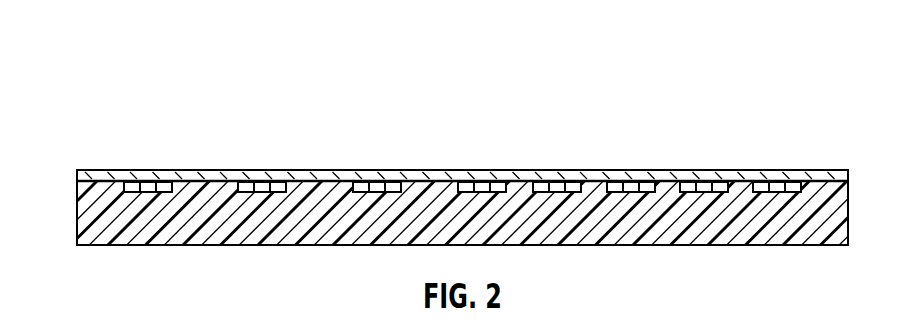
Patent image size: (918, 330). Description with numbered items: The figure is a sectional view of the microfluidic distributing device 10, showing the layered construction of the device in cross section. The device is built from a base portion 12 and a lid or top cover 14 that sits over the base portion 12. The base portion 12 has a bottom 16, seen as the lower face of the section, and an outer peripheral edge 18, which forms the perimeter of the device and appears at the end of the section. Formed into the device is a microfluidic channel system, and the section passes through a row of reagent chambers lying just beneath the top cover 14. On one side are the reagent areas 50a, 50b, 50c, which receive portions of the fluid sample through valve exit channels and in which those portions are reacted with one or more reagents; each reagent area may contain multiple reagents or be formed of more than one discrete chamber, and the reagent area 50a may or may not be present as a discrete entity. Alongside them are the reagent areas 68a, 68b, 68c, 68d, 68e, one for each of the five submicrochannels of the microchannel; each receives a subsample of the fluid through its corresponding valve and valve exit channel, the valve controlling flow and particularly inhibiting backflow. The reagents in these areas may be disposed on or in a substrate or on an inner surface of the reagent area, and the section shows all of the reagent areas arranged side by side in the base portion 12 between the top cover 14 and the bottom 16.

The microfluidic distributing device 10 is at (180, 47).
The base portion 12 is at (77, 228).
The top cover 14 is at (122, 171).
The bottom 16 is at (118, 246).
The outer peripheral edge 18 is at (77, 189).
The reagent area 50a is at (148, 187).
The reagent area 50b is at (263, 187).
The reagent area 50c is at (380, 187).
The reagent area 68a is at (777, 187).
The reagent area 68b is at (704, 187).
The reagent area 68c is at (632, 187).
The reagent area 68d is at (557, 187).
The reagent area 68e is at (483, 187).